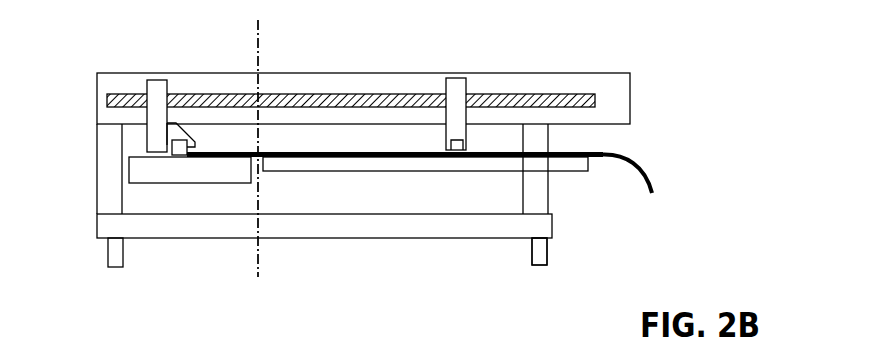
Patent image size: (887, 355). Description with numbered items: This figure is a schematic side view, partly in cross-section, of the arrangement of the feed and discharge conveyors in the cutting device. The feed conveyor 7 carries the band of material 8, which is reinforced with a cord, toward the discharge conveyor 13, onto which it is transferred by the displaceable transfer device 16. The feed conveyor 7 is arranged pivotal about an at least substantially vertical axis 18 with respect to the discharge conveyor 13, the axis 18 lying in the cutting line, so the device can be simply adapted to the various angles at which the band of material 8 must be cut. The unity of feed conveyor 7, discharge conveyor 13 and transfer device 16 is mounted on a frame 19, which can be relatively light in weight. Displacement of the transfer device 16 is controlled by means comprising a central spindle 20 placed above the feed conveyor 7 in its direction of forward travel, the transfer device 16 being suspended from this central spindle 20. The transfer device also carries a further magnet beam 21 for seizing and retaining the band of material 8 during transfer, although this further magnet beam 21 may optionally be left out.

The feed conveyor 7 is at (366, 166).
The band of material 8 is at (578, 150).
The discharge conveyor 13 is at (162, 172).
The transfer device 16 is at (180, 125).
The vertical axis 18 is at (258, 262).
The frame 19 is at (558, 252).
The central spindle 20 is at (348, 95).
The further magnet beam 21 is at (462, 89).